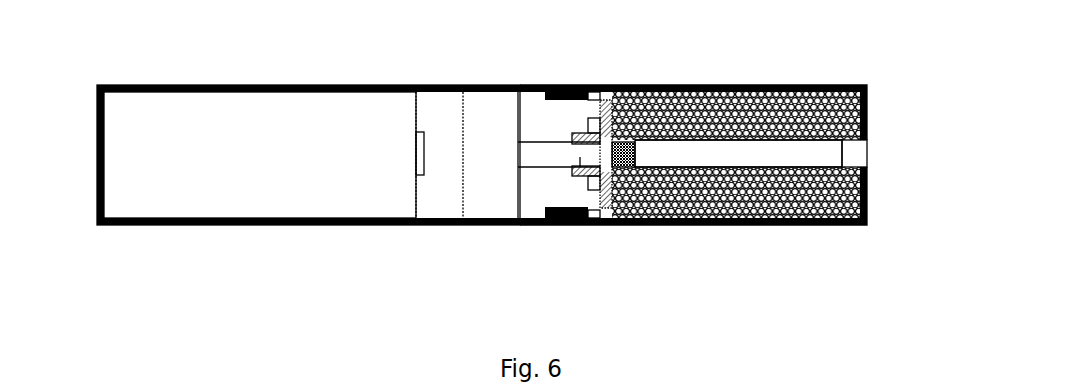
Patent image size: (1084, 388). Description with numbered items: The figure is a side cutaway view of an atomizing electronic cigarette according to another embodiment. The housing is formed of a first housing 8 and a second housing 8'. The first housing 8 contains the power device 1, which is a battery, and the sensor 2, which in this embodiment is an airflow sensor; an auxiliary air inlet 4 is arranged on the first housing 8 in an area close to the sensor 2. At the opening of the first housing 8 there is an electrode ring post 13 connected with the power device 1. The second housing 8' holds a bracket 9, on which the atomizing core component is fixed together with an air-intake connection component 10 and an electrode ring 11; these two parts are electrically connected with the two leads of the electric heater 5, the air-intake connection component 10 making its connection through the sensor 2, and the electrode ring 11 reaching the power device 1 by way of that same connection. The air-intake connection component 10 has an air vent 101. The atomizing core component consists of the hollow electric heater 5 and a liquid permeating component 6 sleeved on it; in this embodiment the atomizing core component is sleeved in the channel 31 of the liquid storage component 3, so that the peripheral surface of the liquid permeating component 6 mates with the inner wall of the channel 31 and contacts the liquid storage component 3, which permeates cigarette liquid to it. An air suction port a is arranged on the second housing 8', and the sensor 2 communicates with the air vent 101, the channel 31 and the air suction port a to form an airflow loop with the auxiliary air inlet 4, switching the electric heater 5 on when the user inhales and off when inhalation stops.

The first housing 8 is at (308, 127).
The second housing 8' is at (693, 127).
The power device 1 is at (343, 128).
The auxiliary air inlet 4 is at (423, 85).
The sensor 2 is at (490, 118).
The air-intake connection component 10 is at (556, 90).
The electrode ring 11 is at (590, 95).
The electric heater 5 is at (640, 154).
The air vent 101 is at (582, 226).
The bracket 9 is at (605, 227).
The liquid permeating component 6 is at (634, 168).
The liquid storage component 3 is at (750, 105).
The channel 31 is at (722, 150).
The air suction port a is at (855, 152).
The electrode ring post 13 is at (548, 228).